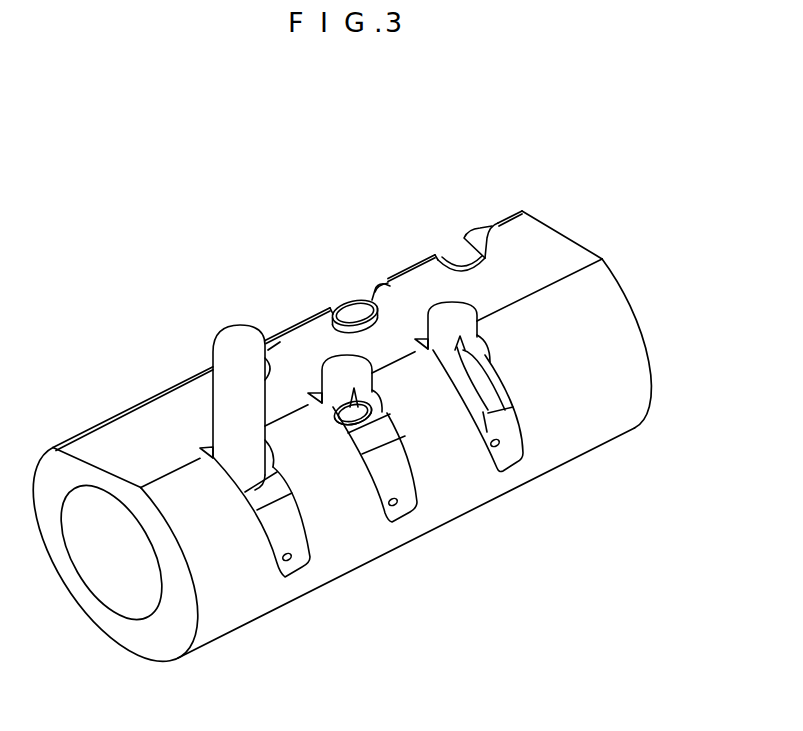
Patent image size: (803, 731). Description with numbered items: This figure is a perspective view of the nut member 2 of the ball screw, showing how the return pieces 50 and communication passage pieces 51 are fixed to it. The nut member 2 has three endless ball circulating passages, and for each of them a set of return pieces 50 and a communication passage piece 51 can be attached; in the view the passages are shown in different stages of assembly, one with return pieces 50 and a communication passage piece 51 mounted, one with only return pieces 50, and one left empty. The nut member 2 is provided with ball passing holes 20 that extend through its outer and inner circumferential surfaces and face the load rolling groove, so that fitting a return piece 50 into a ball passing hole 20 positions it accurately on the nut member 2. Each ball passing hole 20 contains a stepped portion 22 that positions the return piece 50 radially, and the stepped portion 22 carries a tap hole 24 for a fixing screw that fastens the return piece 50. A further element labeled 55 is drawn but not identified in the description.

The nut member 2 is at (124, 400).
The ball passing hole 20 is at (364, 290).
The stepped portion 22 is at (500, 380).
The tap hole 24 is at (497, 455).
The return piece 50 is at (347, 305).
The communication passage piece 51 is at (232, 345).
The ring bushing 55 is at (350, 302).